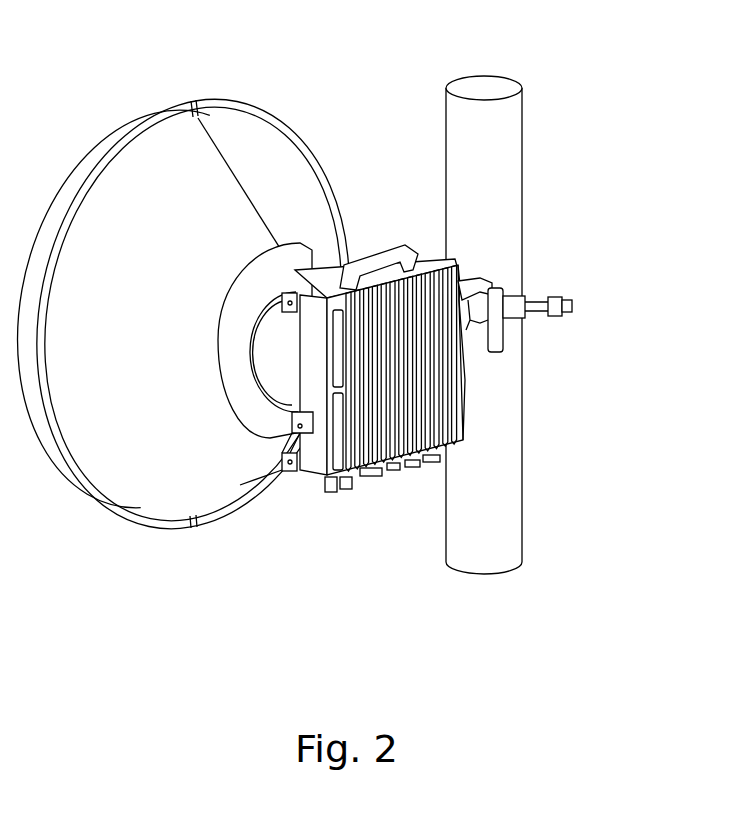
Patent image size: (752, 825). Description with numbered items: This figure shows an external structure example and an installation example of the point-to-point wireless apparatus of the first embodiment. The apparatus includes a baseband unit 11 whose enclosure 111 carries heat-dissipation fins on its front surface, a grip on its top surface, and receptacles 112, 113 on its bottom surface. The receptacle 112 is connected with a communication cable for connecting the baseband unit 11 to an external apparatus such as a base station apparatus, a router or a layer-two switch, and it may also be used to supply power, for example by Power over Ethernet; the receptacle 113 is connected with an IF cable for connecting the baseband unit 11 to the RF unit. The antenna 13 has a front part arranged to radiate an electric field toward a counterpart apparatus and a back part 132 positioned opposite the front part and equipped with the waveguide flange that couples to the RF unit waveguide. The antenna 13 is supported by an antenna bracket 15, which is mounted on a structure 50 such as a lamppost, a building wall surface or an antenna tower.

The antenna 13 is at (193, 283).
The back part 132 is at (287, 162).
The baseband unit 11 is at (406, 222).
The enclosure 111 is at (297, 472).
The receptacle 112 is at (373, 477).
The receptacle 113 is at (330, 492).
The antenna bracket 15 is at (493, 283).
The structure 50 is at (522, 160).